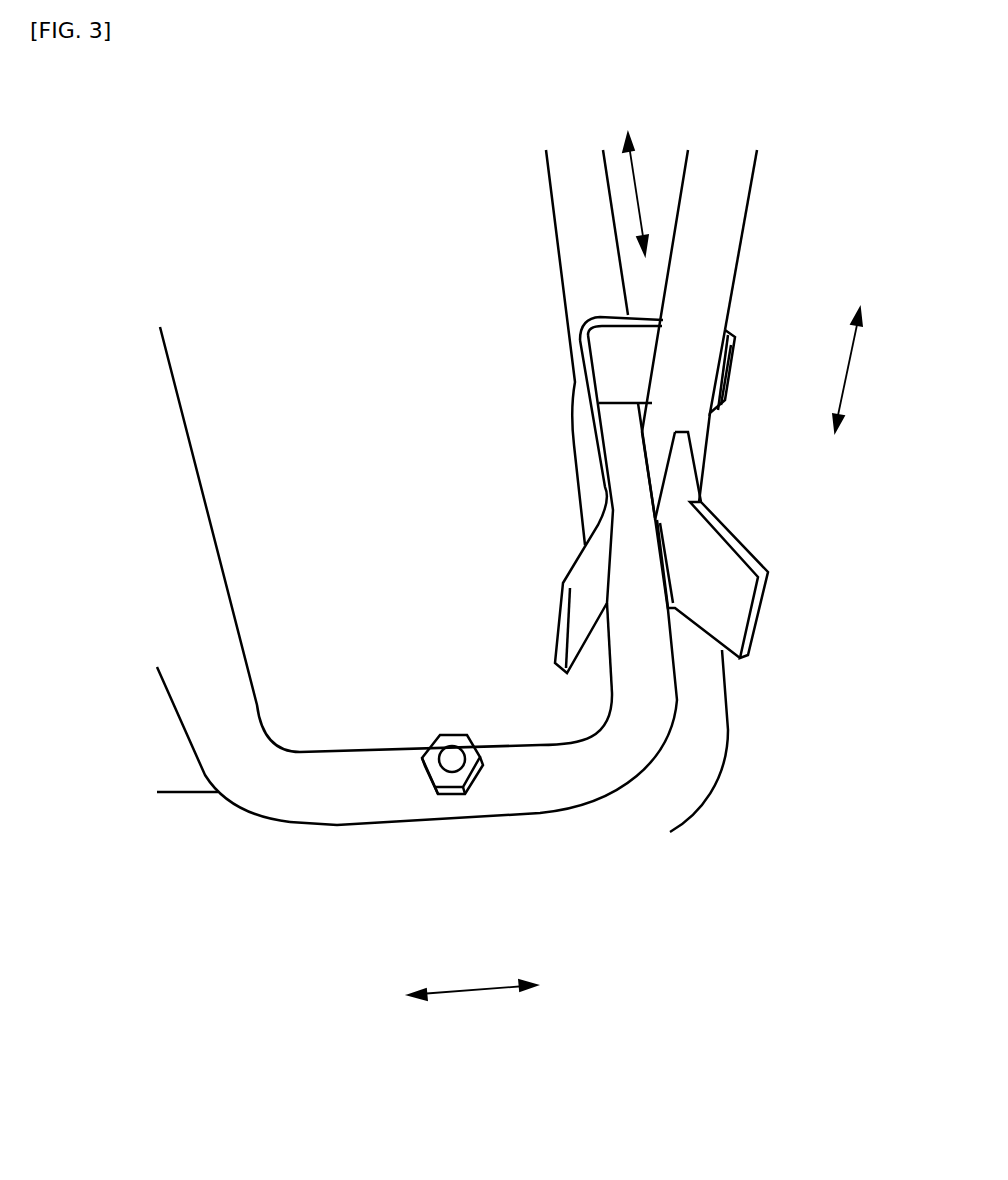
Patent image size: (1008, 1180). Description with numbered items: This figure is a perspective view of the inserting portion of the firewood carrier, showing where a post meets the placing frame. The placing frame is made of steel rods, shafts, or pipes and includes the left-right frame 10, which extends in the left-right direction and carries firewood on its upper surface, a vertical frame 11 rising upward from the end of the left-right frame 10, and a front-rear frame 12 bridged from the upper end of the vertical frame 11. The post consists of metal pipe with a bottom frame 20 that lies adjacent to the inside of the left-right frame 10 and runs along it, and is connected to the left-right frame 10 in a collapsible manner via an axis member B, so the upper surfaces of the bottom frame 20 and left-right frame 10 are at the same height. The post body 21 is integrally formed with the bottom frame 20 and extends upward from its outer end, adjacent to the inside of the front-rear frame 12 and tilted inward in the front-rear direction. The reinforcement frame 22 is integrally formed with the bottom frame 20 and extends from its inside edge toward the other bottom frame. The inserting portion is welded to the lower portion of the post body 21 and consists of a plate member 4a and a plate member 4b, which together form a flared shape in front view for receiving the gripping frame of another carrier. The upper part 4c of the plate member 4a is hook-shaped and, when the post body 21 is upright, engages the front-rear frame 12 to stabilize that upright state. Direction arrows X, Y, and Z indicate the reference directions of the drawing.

The left-right frame 10 is at (710, 536).
The vertical frame 11 is at (693, 677).
The front-rear frame 12 is at (710, 270).
The bottom frame 20 is at (365, 792).
The post body 21 is at (580, 258).
The reinforcement frame 22 is at (182, 528).
The plate member 4a is at (587, 477).
The plate member 4b is at (716, 540).
The upper part of plate member 4c is at (730, 368).
The axis member B is at (450, 750).
The X direction X is at (472, 988).
The Y direction Y is at (848, 368).
The Z direction Z is at (637, 190).